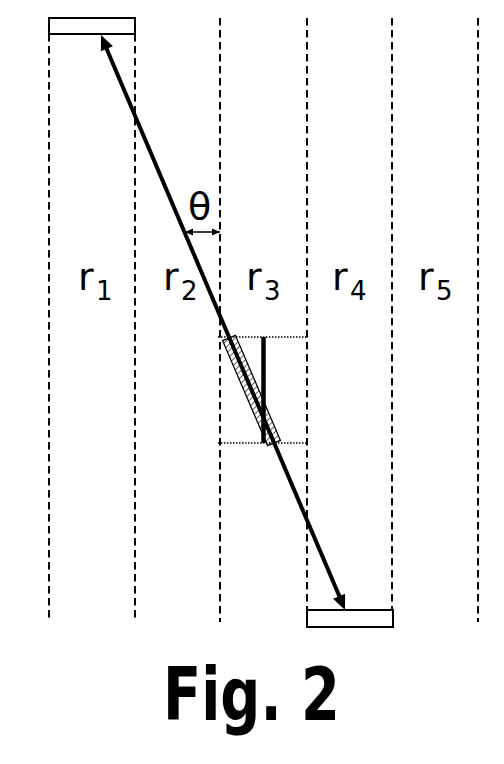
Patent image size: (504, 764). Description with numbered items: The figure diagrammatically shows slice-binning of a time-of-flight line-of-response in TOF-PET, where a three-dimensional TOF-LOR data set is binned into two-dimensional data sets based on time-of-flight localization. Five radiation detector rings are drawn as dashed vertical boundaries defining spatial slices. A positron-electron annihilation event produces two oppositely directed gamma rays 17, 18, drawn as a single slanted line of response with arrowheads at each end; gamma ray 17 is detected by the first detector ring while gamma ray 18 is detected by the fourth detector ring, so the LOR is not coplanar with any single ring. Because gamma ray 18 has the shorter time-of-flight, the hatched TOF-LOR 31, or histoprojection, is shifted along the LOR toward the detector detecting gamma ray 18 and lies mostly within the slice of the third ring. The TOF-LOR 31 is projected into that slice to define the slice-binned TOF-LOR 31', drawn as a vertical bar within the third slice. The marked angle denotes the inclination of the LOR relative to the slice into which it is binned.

The gamma ray 17 is at (153, 154).
The gamma ray 18 is at (315, 538).
The TOF-LOR 31 is at (215, 390).
The slice-binned TOF-LOR 31' is at (323, 390).